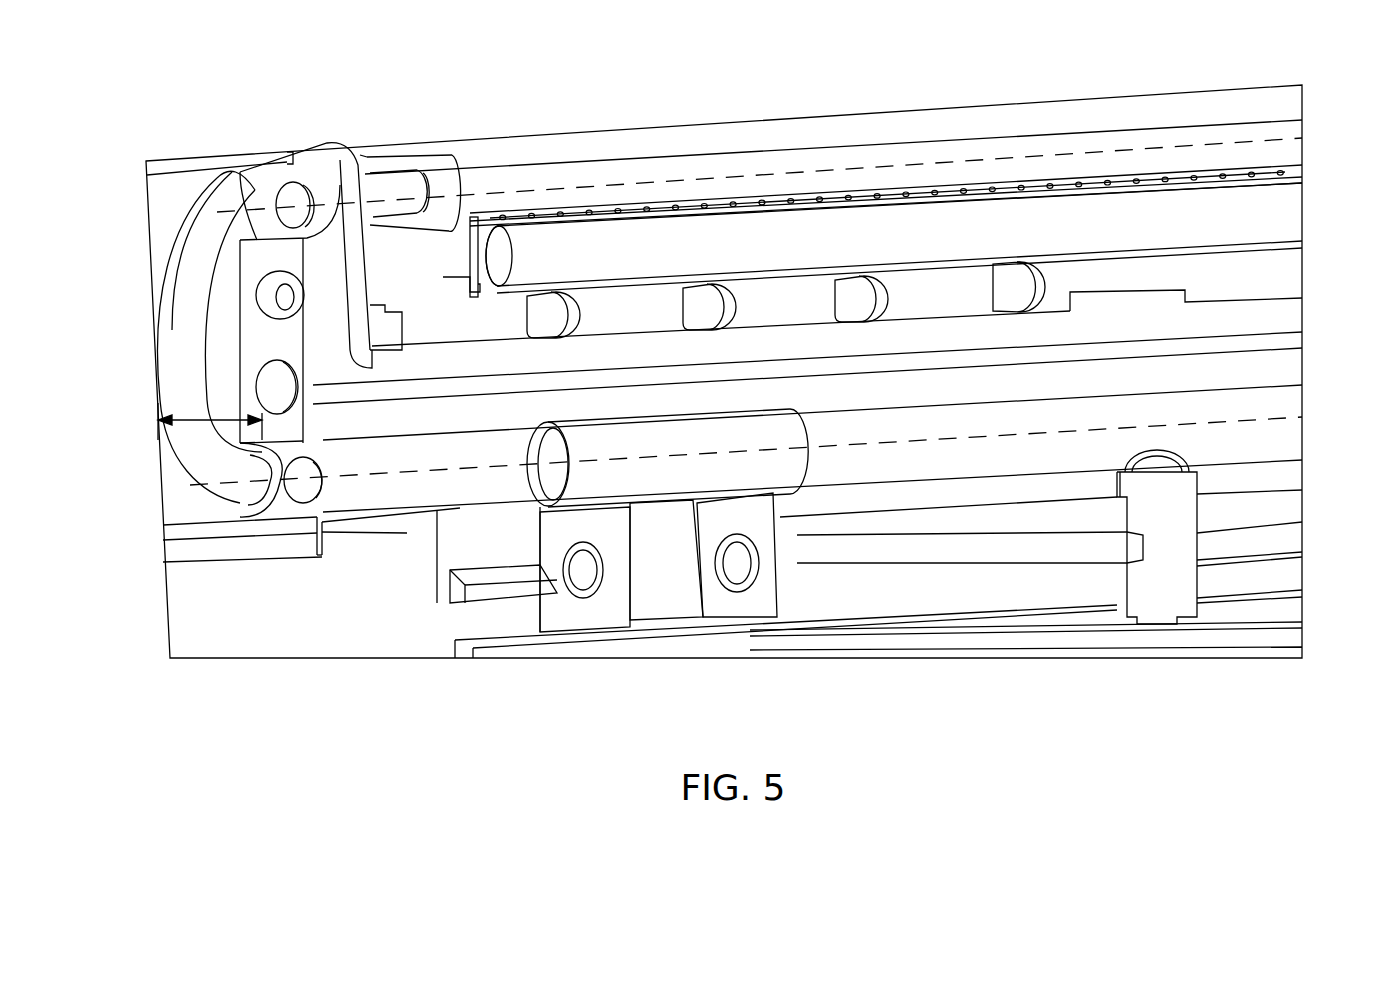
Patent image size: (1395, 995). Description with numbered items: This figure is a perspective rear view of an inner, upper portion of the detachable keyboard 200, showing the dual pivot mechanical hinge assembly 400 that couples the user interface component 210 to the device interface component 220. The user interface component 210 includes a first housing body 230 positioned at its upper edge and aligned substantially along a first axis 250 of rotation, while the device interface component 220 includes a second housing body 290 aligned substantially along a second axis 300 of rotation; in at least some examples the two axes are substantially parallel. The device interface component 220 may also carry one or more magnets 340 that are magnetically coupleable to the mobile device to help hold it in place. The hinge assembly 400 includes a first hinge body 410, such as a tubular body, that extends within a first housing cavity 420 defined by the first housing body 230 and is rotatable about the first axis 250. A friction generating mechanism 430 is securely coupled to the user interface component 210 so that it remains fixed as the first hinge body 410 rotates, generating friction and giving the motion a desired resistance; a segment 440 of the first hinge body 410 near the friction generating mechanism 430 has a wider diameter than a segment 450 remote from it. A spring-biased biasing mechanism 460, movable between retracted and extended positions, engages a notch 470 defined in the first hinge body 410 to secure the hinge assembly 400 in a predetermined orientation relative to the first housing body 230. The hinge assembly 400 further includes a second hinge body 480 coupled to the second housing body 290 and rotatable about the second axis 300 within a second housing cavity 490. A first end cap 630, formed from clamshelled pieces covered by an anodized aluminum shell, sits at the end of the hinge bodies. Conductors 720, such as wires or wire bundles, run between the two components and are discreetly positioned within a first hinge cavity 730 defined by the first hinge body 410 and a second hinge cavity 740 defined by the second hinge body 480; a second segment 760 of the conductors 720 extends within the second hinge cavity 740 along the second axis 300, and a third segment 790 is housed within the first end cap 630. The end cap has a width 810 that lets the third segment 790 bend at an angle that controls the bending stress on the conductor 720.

The keyboard 200 is at (1290, 685).
The user interface component 210 is at (1295, 603).
The device interface component 220 is at (1085, 92).
The first housing body 230 is at (300, 548).
The first axis of rotation 250 is at (1305, 422).
The second housing body 290 is at (423, 155).
The second axis of rotation 300 is at (1305, 140).
The magnets 340 is at (637, 213).
The dual pivot mechanical hinge assembly 400 is at (1335, 378).
The first hinge body 410 is at (350, 658).
The first housing cavity 420 is at (352, 535).
The friction generating mechanism 430 is at (595, 620).
The segment of the first hinge body 440 is at (720, 475).
The segment of the first hinge body 450 is at (958, 460).
The biasing mechanism 460 is at (1172, 593).
The notch 470 is at (1175, 470).
The second hinge body 480 is at (263, 172).
The second housing cavity 490 is at (763, 205).
The first end cap 630 is at (155, 176).
The conductors 720 is at (505, 183).
The first hinge cavity 730 is at (248, 503).
The second hinge cavity 740 is at (482, 210).
The second segment 760 is at (287, 183).
The third segment 790 is at (213, 243).
The width 810 is at (150, 353).